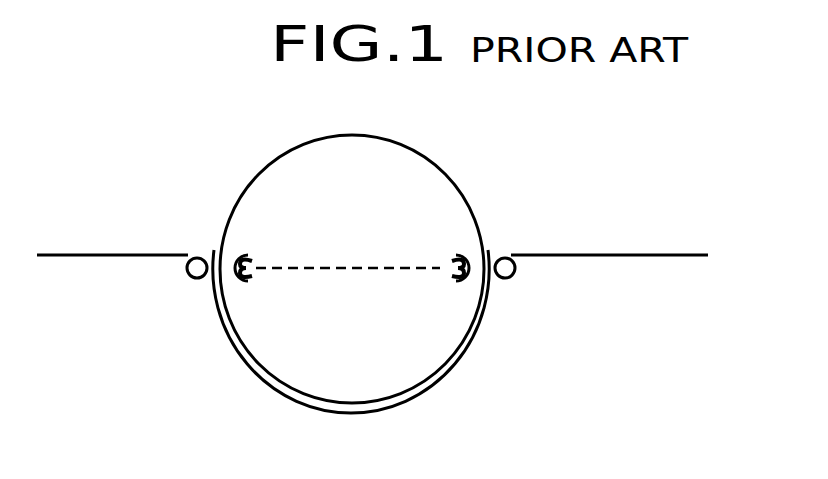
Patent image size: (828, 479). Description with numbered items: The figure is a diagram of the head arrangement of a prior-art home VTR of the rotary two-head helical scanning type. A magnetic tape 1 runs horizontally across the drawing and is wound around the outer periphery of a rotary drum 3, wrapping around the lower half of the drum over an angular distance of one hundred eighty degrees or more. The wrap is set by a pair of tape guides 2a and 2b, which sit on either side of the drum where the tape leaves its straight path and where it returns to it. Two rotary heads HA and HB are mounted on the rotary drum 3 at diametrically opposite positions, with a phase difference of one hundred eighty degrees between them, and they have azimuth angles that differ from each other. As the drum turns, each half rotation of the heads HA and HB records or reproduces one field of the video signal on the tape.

The magnetic tape 1 is at (652, 254).
The tape guide 2a is at (196, 282).
The tape guide 2b is at (507, 282).
The rotary drum 3 is at (431, 162).
The rotary head HA is at (237, 259).
The rotary head HB is at (464, 259).